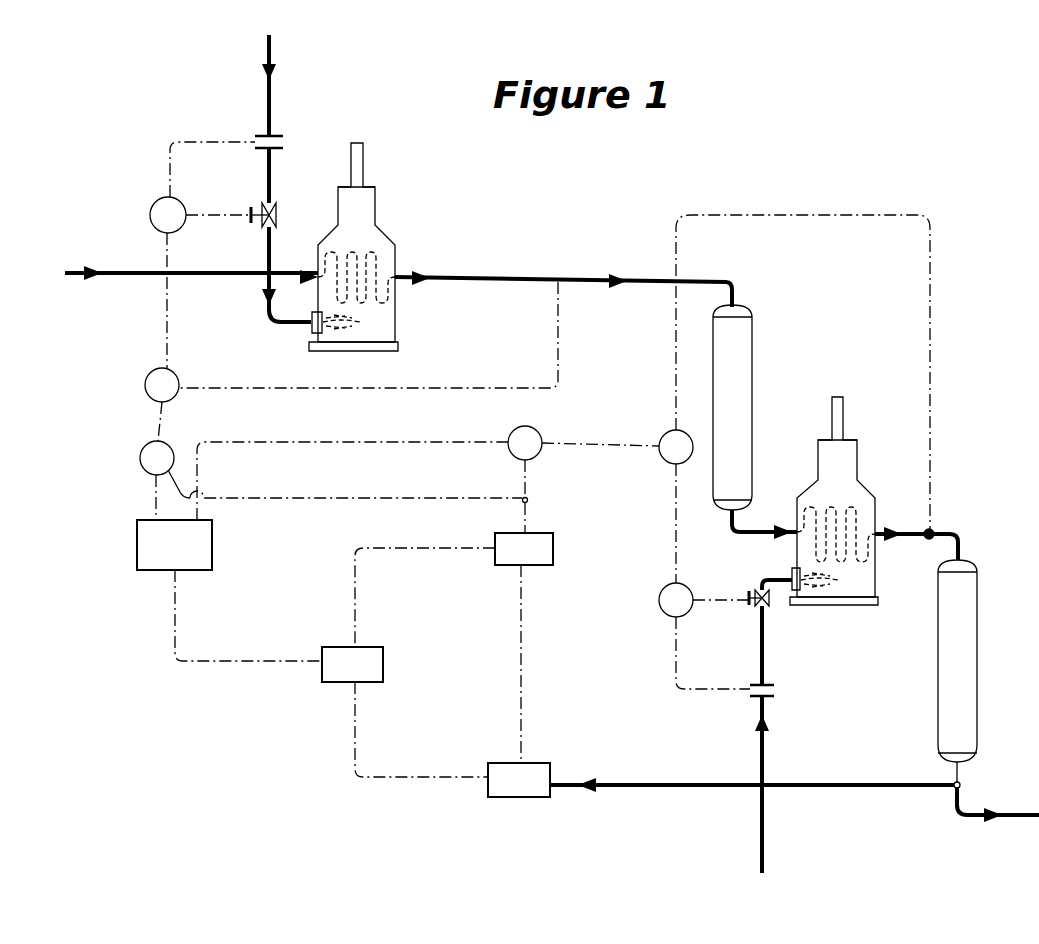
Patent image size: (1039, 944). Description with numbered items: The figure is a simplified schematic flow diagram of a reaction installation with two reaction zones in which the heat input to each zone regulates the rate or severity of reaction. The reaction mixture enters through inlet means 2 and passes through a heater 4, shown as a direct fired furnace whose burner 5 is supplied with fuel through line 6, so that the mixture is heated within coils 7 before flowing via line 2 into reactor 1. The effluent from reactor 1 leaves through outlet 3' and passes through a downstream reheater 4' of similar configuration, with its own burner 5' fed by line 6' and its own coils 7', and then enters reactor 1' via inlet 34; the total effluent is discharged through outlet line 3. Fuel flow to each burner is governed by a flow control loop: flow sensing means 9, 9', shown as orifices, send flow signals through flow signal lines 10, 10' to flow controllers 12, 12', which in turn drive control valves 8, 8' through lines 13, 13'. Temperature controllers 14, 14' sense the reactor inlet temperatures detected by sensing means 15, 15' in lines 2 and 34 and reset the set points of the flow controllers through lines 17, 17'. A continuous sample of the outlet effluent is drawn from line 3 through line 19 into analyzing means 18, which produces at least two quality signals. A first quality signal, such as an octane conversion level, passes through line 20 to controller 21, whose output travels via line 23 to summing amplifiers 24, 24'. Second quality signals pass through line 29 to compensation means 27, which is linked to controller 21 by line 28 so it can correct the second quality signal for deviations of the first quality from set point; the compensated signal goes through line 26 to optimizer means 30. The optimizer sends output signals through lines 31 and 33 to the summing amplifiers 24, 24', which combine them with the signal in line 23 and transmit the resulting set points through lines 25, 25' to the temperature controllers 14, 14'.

The reactor 1 is at (746, 400).
The reactor 1' is at (971, 661).
The inlet means 2 is at (143, 270).
The outlet line 3 is at (971, 789).
The outlet 3' is at (764, 524).
The heater 4 is at (359, 247).
The reheater 4' is at (842, 501).
The burner 5 is at (336, 341).
The burner 5' is at (815, 599).
The fuel line 6 is at (273, 194).
The fuel line 6' is at (758, 726).
The coils 7 is at (369, 283).
The coils 7' is at (853, 524).
The control valve 8 is at (272, 202).
The control valve 8' is at (772, 615).
The flow sensing means 9 is at (285, 132).
The flow sensing means 9' is at (784, 685).
The flow signal line 10 is at (212, 154).
The flow signal line 10' is at (713, 653).
The flow controller 12 is at (144, 207).
The flow controller 12' is at (688, 590).
The line 13 is at (218, 232).
The line 13' is at (720, 615).
The temperature controller 14 is at (183, 375).
The temperature controller 14' is at (665, 462).
The sensing means 15 is at (388, 319).
The sensing means 15' is at (923, 532).
The line 17 is at (141, 300).
The line 17' is at (784, 399).
The analyzing means 18 is at (520, 800).
The line 19 is at (624, 784).
The line 20 is at (522, 658).
The controller 21 is at (555, 550).
The line 23 is at (445, 498).
The summing amplifier 24 is at (132, 458).
The summing amplifier 24' is at (541, 433).
The line 25 is at (135, 420).
The line 25' is at (600, 428).
The line 26 is at (258, 658).
The compensation means 27 is at (385, 668).
The line 28 is at (352, 580).
The line 29 is at (352, 738).
The optimizer means 30 is at (137, 544).
The line 31 is at (150, 502).
The line 33 is at (410, 440).
The inlet 34 is at (963, 554).